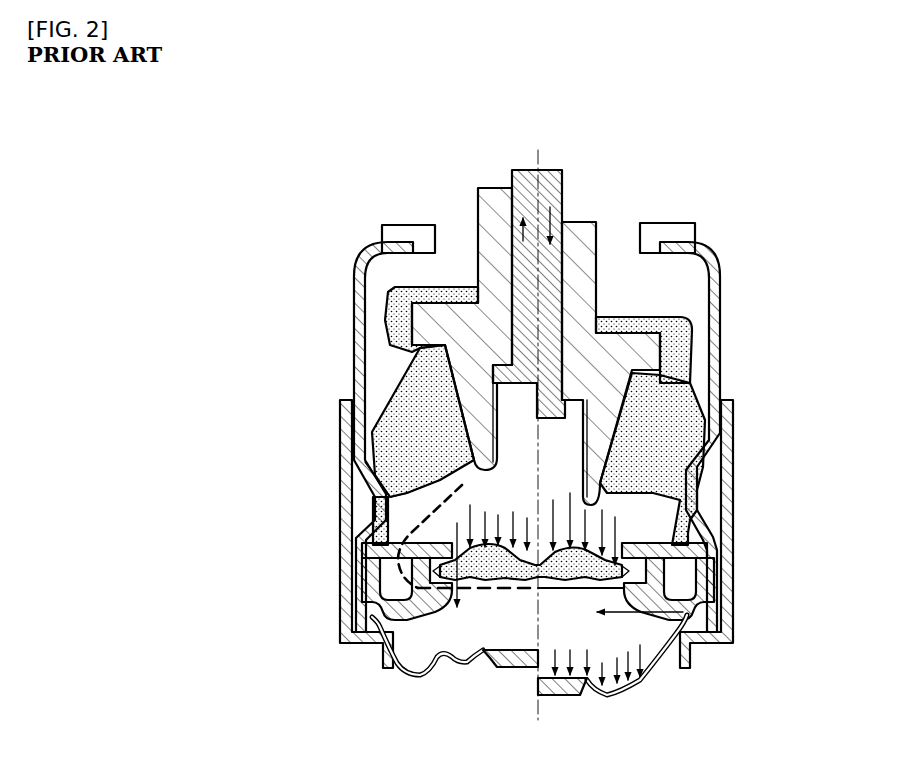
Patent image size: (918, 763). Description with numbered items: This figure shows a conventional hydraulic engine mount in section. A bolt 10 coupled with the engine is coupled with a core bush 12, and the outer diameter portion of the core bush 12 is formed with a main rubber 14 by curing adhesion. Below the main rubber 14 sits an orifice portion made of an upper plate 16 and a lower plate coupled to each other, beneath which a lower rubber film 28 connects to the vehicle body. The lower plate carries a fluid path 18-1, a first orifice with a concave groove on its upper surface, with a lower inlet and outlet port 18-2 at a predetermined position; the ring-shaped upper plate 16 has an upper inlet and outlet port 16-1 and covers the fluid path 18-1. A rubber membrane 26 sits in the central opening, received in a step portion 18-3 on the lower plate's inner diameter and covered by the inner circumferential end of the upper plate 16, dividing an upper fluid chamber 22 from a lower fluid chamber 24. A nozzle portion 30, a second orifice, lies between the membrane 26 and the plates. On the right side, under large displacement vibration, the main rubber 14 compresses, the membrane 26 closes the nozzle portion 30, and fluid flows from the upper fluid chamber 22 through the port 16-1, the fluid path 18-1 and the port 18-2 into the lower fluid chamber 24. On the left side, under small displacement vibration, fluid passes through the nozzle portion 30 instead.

The bolt 10 is at (567, 184).
The core bush 12 is at (580, 237).
The main rubber 14 is at (678, 405).
The upper plate 16 is at (674, 540).
The upper inlet and outlet port 16-1 is at (355, 530).
The fluid path 18-1 is at (685, 578).
The lower inlet and outlet port 18-2 is at (687, 612).
The step portion 18-3 is at (418, 548).
The upper fluid chamber 22 is at (422, 502).
The lower fluid chamber 24 is at (470, 633).
The membrane 26 is at (522, 547).
The lower rubber film 28 is at (512, 666).
The nozzle portion 30 is at (437, 548).